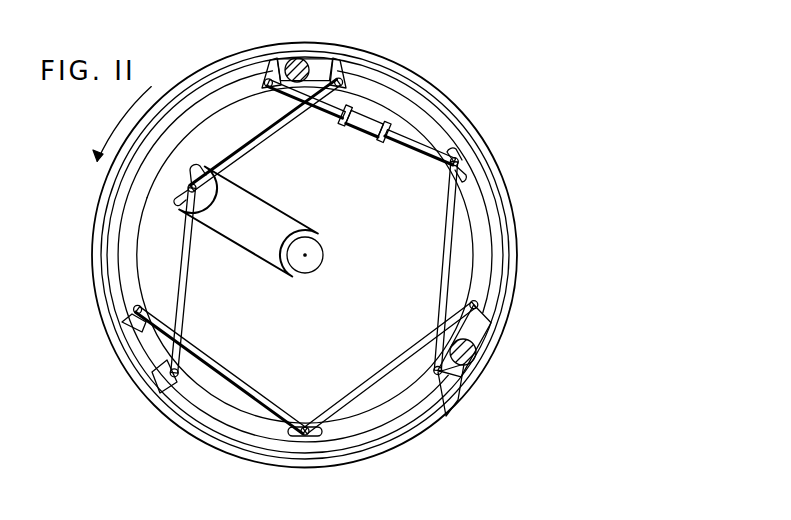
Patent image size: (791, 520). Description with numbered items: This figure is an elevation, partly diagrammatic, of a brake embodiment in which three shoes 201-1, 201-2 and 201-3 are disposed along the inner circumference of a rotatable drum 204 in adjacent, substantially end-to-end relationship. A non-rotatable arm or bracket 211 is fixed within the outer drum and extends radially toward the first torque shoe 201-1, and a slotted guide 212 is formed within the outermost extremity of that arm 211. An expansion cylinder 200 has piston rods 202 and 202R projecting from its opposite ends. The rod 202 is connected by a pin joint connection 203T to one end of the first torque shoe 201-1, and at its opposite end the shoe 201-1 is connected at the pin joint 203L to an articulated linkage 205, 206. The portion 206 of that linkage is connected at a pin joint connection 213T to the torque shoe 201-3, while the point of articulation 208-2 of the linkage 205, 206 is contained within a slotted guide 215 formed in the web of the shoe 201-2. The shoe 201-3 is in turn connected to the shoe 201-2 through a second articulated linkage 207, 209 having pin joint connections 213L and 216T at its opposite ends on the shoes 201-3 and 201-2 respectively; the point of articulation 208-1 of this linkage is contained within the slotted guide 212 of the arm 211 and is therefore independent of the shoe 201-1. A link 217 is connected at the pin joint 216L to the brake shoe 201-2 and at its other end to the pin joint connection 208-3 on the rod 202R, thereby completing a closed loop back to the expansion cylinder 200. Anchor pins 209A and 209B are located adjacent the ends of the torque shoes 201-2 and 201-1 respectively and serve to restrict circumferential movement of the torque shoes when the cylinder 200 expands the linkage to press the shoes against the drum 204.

The expansion cylinder 200 is at (358, 130).
The first torque shoe 201-1 is at (197, 118).
The shoe 201-2 is at (403, 393).
The torque shoe 201-3 is at (472, 247).
The piston rod 202 is at (330, 117).
The piston rod 202R is at (402, 150).
The pin joint 203L is at (134, 310).
The pin joint connection 203T is at (268, 78).
The rotatable drum 204 is at (112, 323).
The articulated linkage portion 205 is at (257, 390).
The articulated linkage portion 206 is at (405, 358).
The articulated linkage portion 207 is at (268, 133).
The point of articulation 208-1 is at (195, 192).
The point of articulation 208-2 is at (307, 425).
The pin joint connection 208-3 is at (450, 170).
The articulated linkage portion 209 is at (187, 277).
The anchor pin 209A is at (472, 355).
The anchor pin 209B is at (302, 66).
The non-rotatable arm 211 is at (277, 213).
The slotted guide 212 is at (180, 198).
The pin joint connection 213L is at (345, 80).
The pin joint connection 213T is at (480, 305).
The slotted guide 215 is at (318, 433).
The pin joint 216L is at (445, 400).
The pin joint connection 216T is at (157, 385).
The link 217 is at (442, 287).